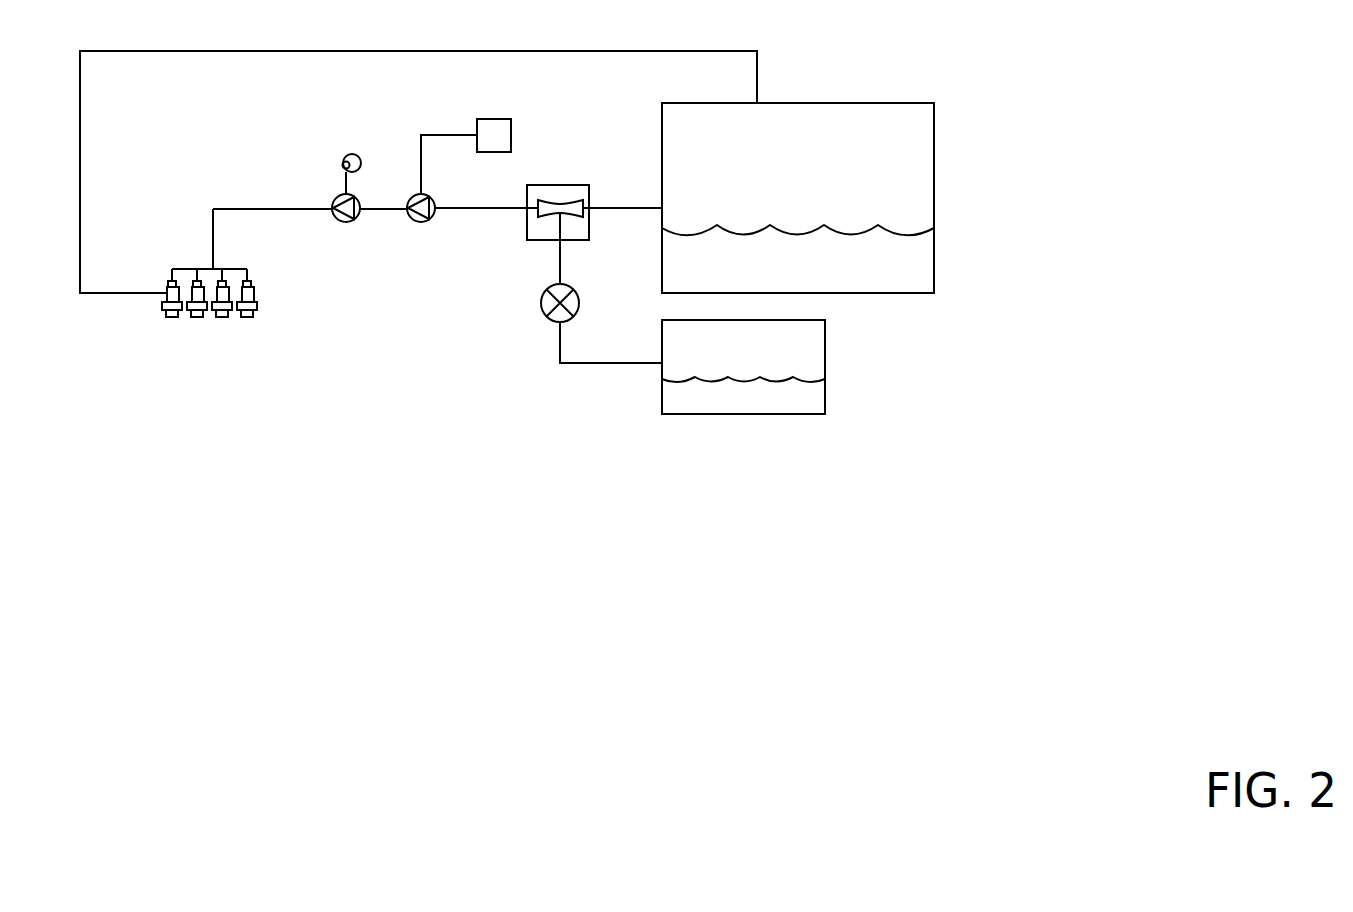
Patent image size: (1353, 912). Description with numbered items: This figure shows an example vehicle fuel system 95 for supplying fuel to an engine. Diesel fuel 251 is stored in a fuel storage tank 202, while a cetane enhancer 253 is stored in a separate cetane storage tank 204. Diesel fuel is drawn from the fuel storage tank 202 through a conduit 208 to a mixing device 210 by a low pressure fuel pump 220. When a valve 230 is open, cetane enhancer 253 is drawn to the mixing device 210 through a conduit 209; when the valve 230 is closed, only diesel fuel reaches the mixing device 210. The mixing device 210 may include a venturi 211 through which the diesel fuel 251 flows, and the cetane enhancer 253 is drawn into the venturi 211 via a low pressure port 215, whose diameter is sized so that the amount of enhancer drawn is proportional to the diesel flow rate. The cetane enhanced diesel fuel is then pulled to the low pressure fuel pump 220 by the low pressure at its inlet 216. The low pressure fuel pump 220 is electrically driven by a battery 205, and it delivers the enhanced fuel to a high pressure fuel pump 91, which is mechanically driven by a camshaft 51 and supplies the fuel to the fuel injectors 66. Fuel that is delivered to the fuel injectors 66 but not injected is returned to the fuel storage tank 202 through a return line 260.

The vehicle fuel system 95 is at (395, 19).
The return line 260 is at (200, 50).
The fuel injectors 66 is at (167, 283).
The camshaft 51 is at (344, 158).
The high pressure fuel pump 91 is at (346, 222).
The low pressure fuel pump 220 is at (418, 222).
The battery 205 is at (500, 119).
The inlet of low pressure fuel pump 216 is at (432, 201).
The mixing device 210 is at (560, 185).
The venturi 211 is at (572, 206).
The conduit 208 is at (618, 208).
The low pressure port 215 is at (558, 214).
The valve 230 is at (574, 310).
The conduit 209 is at (625, 364).
The fuel storage tank 202 is at (798, 198).
The diesel fuel 251 is at (818, 277).
The cetane storage tank 204 is at (743, 367).
The cetane enhancer 253 is at (762, 411).